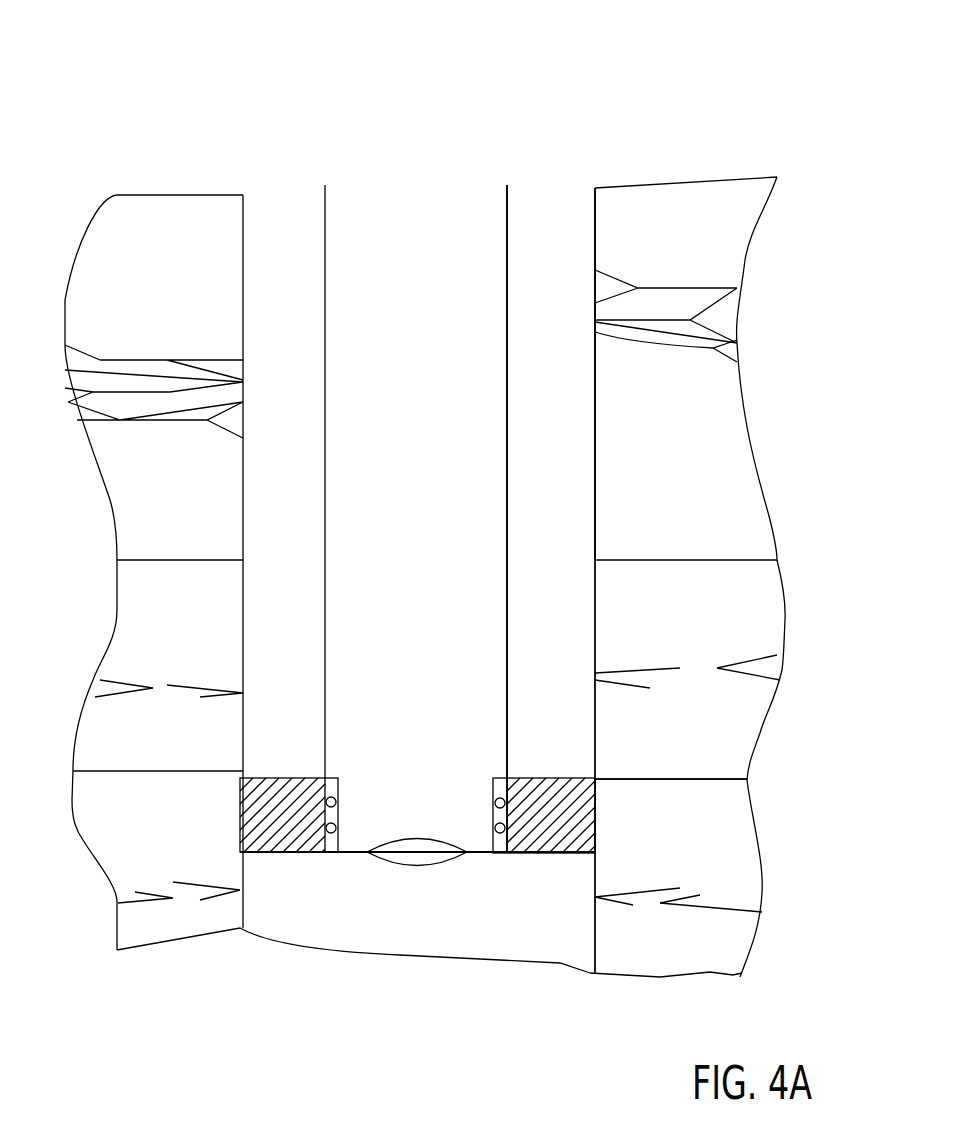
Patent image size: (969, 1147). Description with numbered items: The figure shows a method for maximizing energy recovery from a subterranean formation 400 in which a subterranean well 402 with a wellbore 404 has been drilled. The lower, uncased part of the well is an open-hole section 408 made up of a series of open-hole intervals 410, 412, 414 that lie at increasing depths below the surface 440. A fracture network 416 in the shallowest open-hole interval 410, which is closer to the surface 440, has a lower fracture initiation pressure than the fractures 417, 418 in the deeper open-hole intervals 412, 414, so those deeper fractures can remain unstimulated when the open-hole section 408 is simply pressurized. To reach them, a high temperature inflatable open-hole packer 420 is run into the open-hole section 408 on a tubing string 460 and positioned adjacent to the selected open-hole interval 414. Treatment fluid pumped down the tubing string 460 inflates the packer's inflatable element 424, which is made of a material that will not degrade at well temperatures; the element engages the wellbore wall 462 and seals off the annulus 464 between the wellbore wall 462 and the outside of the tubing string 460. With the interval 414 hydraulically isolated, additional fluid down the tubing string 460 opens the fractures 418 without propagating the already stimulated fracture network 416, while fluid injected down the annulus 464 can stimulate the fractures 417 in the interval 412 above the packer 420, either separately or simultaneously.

The subterranean formation 400 is at (183, 928).
The subterranean well 402 is at (300, 160).
The wellbore 404 is at (542, 128).
The open-hole section 408 is at (262, 205).
The open-hole interval 410 is at (738, 478).
The open-hole interval 412 is at (740, 725).
The open-hole interval 414 is at (732, 838).
The fracture network 416 is at (737, 343).
The fractures 417 is at (777, 655).
The fractures 418 is at (762, 912).
The high temperature inflatable open-hole packer 420 is at (500, 783).
The inflatable element 424 is at (538, 855).
The surface 440 is at (672, 185).
The tubing string 460 is at (509, 368).
The wellbore wall 462 is at (592, 424).
The annulus 464 is at (565, 222).